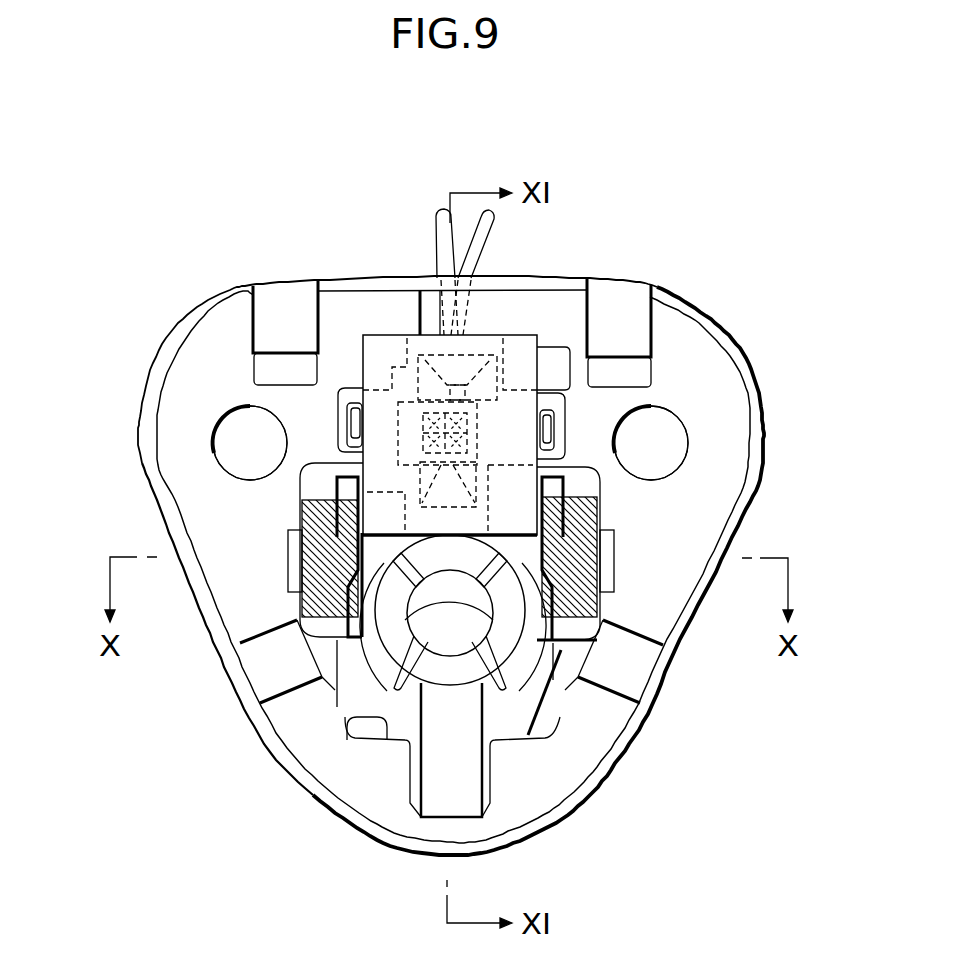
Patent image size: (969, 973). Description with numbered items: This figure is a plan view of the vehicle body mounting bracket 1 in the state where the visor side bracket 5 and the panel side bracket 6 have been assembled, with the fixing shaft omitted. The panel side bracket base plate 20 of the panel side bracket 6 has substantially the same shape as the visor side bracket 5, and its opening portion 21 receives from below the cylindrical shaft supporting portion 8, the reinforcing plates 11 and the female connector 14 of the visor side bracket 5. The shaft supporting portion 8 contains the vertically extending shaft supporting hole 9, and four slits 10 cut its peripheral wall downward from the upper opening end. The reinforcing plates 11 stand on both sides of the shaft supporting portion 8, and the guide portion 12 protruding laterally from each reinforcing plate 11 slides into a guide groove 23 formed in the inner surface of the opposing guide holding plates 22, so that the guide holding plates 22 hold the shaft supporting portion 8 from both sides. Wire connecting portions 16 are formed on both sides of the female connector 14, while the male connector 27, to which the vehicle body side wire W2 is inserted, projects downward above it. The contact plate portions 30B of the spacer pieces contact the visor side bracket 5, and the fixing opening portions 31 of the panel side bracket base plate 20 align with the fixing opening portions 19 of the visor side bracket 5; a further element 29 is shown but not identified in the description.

The vehicle body mounting bracket 1 is at (790, 212).
The visor side bracket 5 is at (722, 320).
The panel side bracket 6 is at (692, 313).
The shaft supporting portion 8 is at (492, 702).
The shaft supporting hole 9 is at (428, 603).
The slits 10 is at (623, 713).
The reinforcing plates 11 is at (300, 517).
The guide portion 12 is at (322, 550).
The female connector 14 is at (505, 352).
The wire connecting portions 16 is at (355, 425).
The fixing opening portions 19 is at (450, 443).
The panel side bracket base plate 20 is at (723, 397).
The opening portion 21 is at (373, 730).
The guide holding plates 22 is at (302, 575).
The guide grooves 23 is at (298, 618).
The male connector 27 is at (488, 432).
The connector housing 29 is at (382, 350).
The contact plate portion 30B is at (285, 297).
The fixing opening portions 31 is at (232, 450).
The wire W2 is at (435, 214).